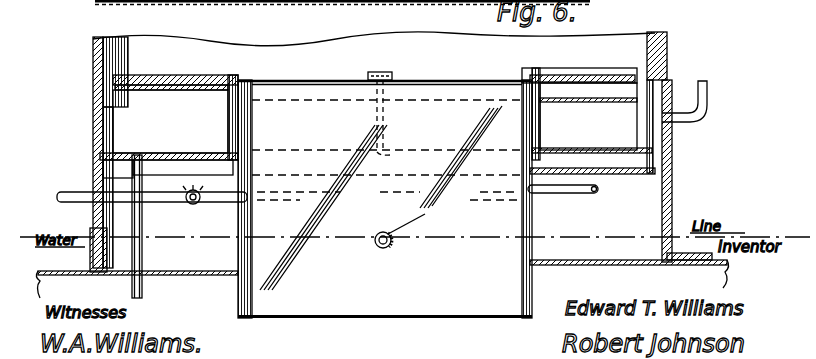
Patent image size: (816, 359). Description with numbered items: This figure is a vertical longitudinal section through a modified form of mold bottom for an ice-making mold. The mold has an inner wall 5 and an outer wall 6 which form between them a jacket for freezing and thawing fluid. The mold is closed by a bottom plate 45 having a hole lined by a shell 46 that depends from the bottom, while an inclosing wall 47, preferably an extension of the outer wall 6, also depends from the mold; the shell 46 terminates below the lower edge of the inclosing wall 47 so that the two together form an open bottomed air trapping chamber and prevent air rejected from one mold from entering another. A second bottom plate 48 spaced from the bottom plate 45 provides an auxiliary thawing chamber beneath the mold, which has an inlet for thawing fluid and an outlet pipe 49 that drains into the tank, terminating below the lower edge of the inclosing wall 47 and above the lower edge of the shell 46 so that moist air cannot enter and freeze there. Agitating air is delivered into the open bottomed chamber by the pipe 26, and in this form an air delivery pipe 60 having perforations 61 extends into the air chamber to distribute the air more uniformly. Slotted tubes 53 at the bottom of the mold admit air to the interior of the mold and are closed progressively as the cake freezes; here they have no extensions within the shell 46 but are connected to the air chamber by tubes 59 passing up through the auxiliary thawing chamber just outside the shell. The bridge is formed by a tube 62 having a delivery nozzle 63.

The inner wall 5 is at (118, 75).
The outer wall 6 is at (93, 58).
The pipe 26 is at (70, 182).
The bottom plate 45 is at (545, 100).
The shell 46 is at (256, 130).
The inclosing wall 47 is at (670, 194).
The second bottom plate 48 is at (203, 147).
The outlet pipe 49 is at (141, 225).
The tubes 53 is at (390, 75).
The tubes 59 is at (228, 118).
The air delivery pipe 60 is at (228, 201).
The perforations 61 is at (555, 185).
The tube 62 is at (384, 248).
The delivery nozzle 63 is at (390, 231).